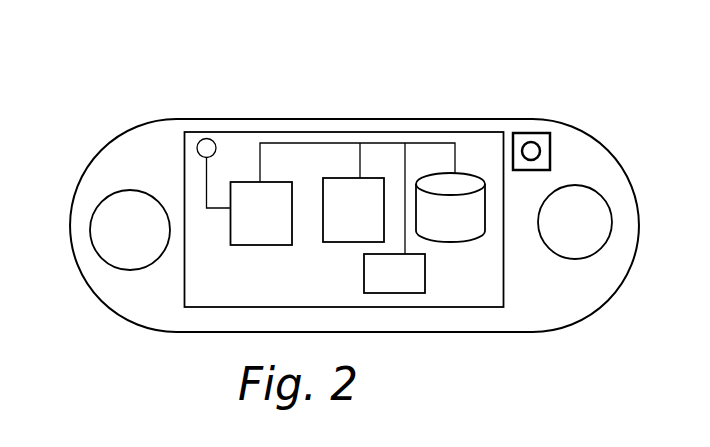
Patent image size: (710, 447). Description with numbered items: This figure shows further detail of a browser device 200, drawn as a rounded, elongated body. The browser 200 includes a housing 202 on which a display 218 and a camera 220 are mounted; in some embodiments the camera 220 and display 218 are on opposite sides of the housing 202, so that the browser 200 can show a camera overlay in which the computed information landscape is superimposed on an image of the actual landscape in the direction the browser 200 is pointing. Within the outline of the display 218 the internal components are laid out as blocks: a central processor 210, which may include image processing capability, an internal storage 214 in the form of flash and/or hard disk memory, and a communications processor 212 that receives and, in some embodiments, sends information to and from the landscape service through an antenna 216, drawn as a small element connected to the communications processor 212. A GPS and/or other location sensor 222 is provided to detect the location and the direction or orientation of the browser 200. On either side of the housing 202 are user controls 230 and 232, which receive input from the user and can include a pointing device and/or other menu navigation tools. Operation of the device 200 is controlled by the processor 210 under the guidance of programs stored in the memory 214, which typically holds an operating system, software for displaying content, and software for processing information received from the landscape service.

The browser 200 is at (354, 179).
The housing 202 is at (373, 119).
The central processor 210 is at (373, 224).
The communications processor 212 is at (280, 229).
The internal storage 214 is at (470, 229).
The antenna 216 is at (207, 185).
The display 218 is at (504, 253).
The camera 220 is at (552, 150).
The location sensor 222 is at (413, 287).
The user control 230 is at (148, 242).
The user control 232 is at (597, 235).